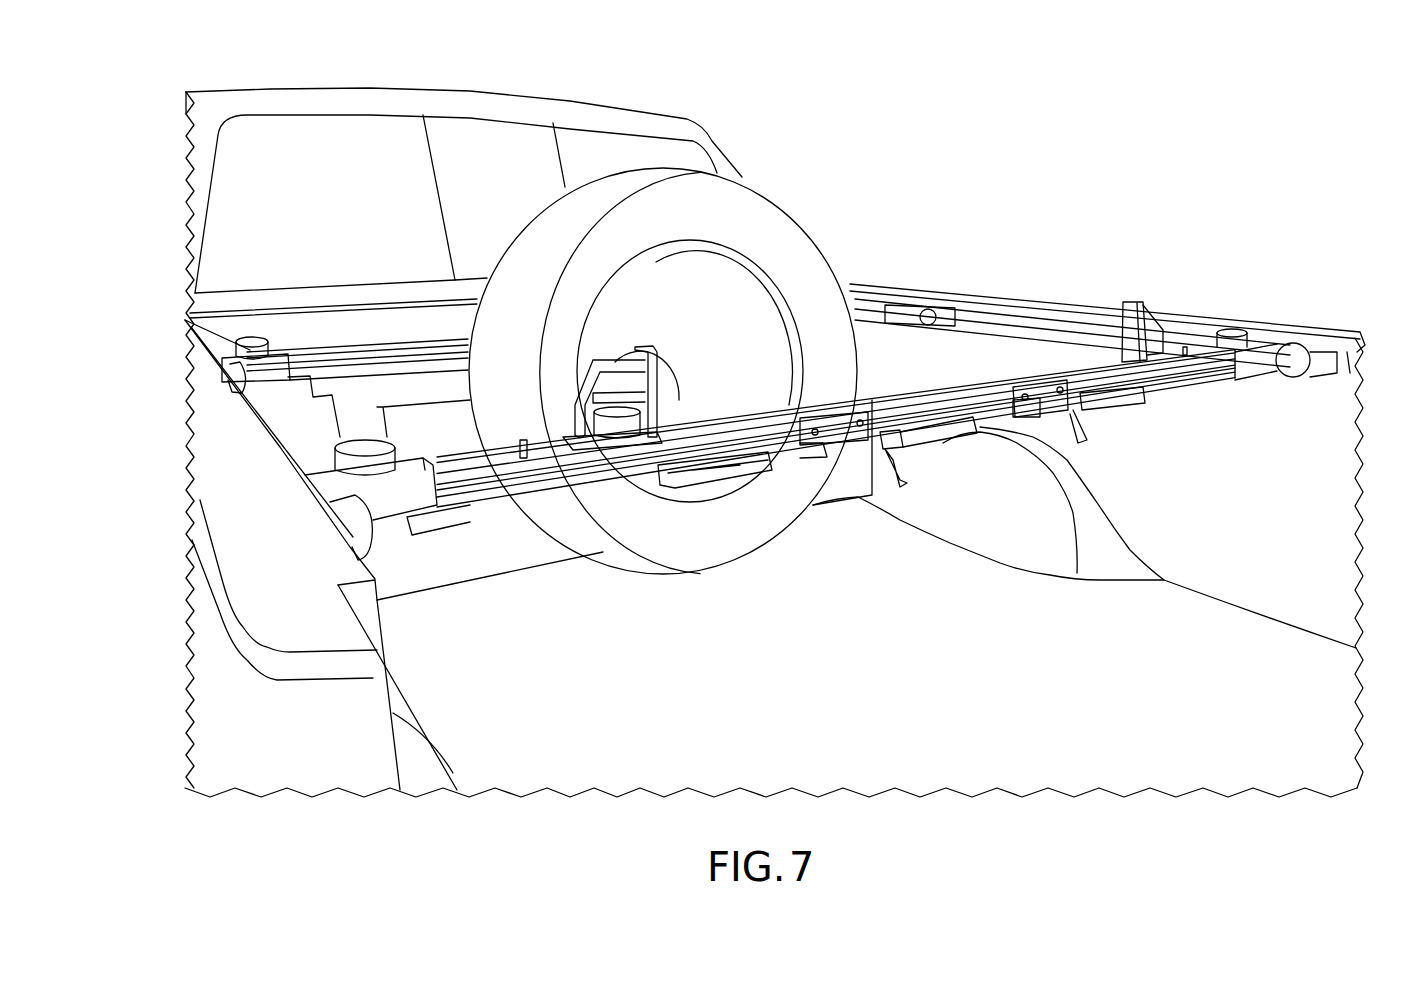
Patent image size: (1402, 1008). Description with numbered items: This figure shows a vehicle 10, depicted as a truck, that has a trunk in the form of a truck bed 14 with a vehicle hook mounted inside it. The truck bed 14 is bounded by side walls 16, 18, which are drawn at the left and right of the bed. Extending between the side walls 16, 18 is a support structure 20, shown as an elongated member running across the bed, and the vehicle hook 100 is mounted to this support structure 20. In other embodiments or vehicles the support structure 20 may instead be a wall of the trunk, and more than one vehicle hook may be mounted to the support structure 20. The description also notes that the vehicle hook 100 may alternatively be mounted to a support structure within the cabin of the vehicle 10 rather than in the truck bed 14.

The vehicle 10 is at (137, 120).
The truck bed 14 is at (185, 357).
The side wall 16 is at (205, 540).
The side wall 18 is at (1342, 444).
The support structure 20 is at (470, 505).
The vehicle hook 100 is at (697, 495).